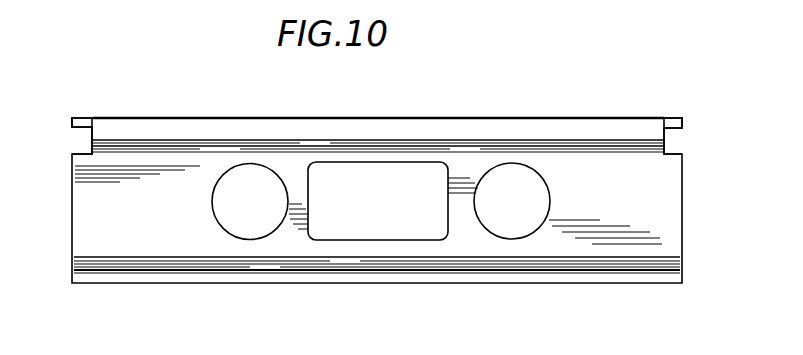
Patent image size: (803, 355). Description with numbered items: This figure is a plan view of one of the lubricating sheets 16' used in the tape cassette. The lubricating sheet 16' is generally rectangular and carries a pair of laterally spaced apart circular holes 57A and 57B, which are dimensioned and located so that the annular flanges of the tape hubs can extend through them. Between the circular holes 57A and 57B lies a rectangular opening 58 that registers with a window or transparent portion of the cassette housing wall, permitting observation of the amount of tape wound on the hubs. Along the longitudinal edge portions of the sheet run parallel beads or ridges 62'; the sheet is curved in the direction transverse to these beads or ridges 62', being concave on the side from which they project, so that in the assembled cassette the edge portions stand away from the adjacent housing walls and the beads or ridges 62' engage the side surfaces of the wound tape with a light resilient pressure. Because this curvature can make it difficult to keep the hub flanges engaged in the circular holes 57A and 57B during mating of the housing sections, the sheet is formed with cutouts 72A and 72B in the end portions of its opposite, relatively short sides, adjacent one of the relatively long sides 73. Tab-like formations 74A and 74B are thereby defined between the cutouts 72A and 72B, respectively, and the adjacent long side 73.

The lubricating sheet 16' is at (377, 180).
The relatively long side 73 is at (345, 100).
The tab-like formation 74A is at (82, 118).
The tab-like formation 74B is at (672, 122).
The cutout 72A is at (84, 129).
The cutout 72B is at (666, 131).
The beads or ridges 62' is at (377, 207).
The circular hole 57A is at (213, 200).
The circular hole 57B is at (549, 196).
The rectangular opening 58 is at (376, 219).